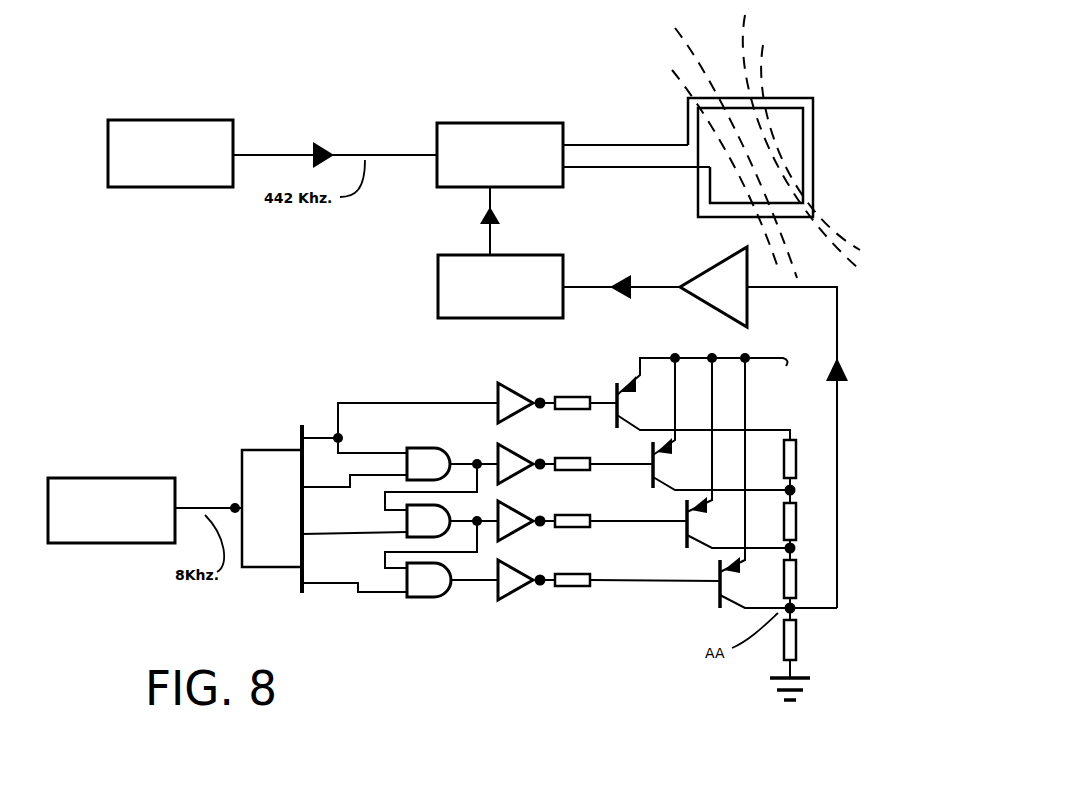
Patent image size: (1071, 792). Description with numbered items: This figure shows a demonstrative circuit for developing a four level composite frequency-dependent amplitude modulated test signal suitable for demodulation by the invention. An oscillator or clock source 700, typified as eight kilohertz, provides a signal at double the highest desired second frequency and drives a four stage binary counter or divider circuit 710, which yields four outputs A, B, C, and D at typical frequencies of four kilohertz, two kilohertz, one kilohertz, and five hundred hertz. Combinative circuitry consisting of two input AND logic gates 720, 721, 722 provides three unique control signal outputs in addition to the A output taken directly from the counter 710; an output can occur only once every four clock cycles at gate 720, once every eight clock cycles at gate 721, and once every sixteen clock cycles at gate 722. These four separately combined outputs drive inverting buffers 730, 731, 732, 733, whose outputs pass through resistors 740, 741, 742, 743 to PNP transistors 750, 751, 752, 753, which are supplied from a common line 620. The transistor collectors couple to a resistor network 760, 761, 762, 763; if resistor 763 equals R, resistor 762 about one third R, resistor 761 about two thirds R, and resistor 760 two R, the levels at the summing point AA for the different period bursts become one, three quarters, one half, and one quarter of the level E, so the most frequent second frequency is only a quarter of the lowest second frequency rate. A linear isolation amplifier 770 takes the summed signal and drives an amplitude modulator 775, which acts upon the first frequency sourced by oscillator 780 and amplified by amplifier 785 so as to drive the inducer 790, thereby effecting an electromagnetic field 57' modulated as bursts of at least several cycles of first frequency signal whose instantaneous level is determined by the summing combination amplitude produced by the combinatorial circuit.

The electromagnetic field 57' is at (737, 146).
The power supply line 620 is at (788, 360).
The oscillator 700 is at (121, 504).
The four stage binary counter or divider circuit 710 is at (262, 500).
The AND logic gate 720 is at (423, 458).
The AND logic gate 721 is at (428, 526).
The AND logic gate 722 is at (442, 584).
The inverting buffer 730 is at (514, 406).
The inverting buffer 731 is at (517, 464).
The inverting buffer 732 is at (517, 525).
The inverting buffer 733 is at (517, 583).
The resistor 740 is at (583, 403).
The resistor 741 is at (583, 462).
The resistor 742 is at (583, 519).
The resistor 743 is at (583, 578).
The transistor 750 is at (690, 399).
The transistor 751 is at (690, 424).
The transistor 752 is at (672, 530).
The transistor 753 is at (714, 588).
The resistor 760 is at (796, 470).
The resistor 761 is at (796, 530).
The resistor 762 is at (796, 590).
The resistor 763 is at (796, 648).
The linear isolation amplifier 770 is at (716, 280).
The amplitude modulator 775 is at (522, 296).
The oscillator 780 is at (185, 140).
The amplifier 785 is at (517, 156).
The inducer 790 is at (800, 142).